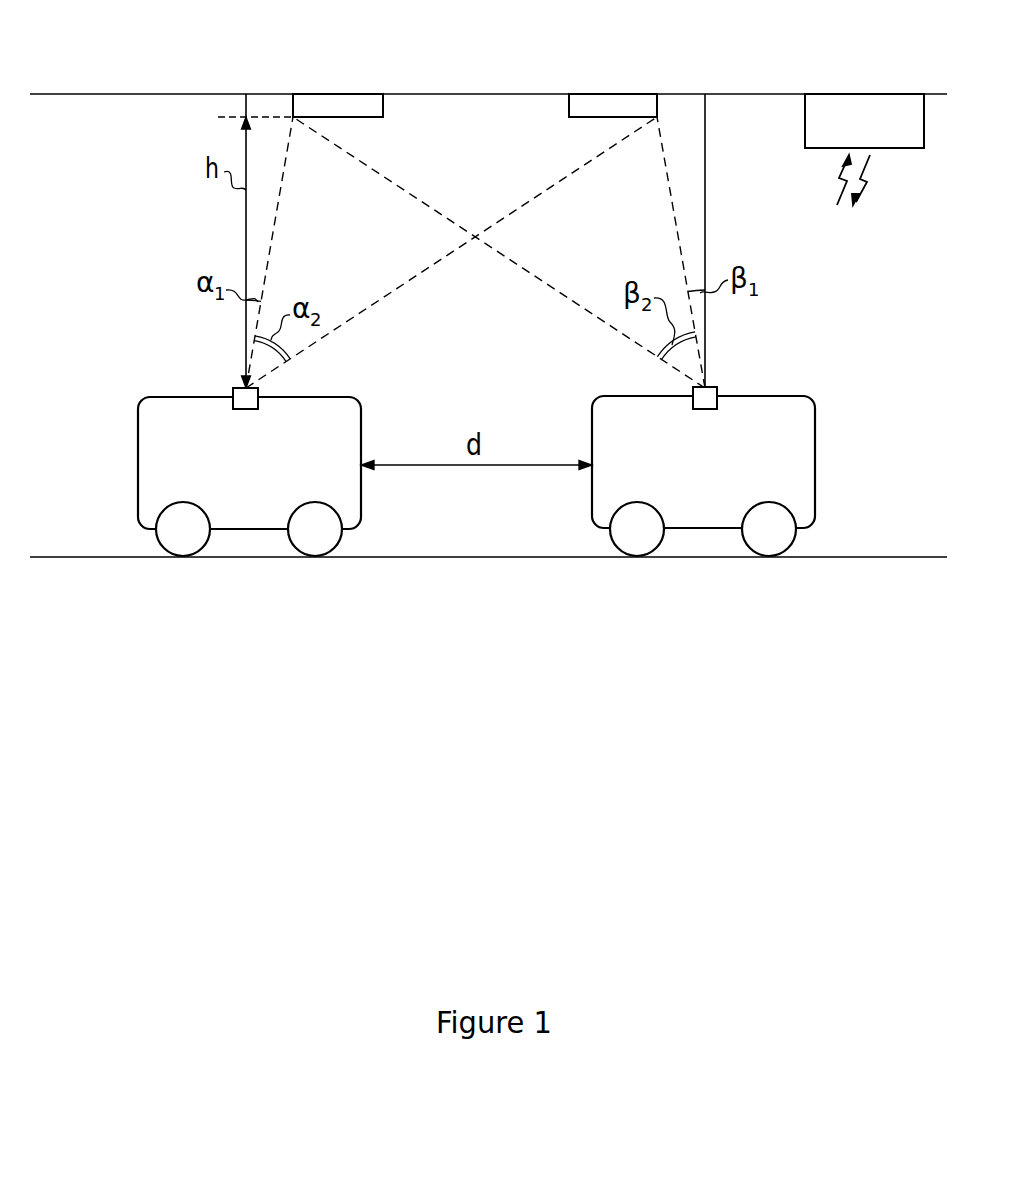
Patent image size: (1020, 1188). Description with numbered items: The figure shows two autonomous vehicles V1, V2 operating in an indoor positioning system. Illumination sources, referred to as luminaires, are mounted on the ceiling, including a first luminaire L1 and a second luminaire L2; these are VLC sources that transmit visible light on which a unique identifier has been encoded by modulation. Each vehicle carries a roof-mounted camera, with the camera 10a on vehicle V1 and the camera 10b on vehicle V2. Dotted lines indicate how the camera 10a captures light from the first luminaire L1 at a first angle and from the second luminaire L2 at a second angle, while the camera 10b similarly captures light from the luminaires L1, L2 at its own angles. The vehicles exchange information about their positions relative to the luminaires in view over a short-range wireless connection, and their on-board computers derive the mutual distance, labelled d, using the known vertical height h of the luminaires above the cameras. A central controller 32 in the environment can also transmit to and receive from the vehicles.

The camera 10a is at (235, 390).
The camera 10b is at (722, 390).
The central controller 32 is at (908, 94).
The first luminaire L1 is at (315, 94).
The second luminaire L2 is at (610, 94).
The vehicle V1 is at (249, 476).
The vehicle V2 is at (703, 476).